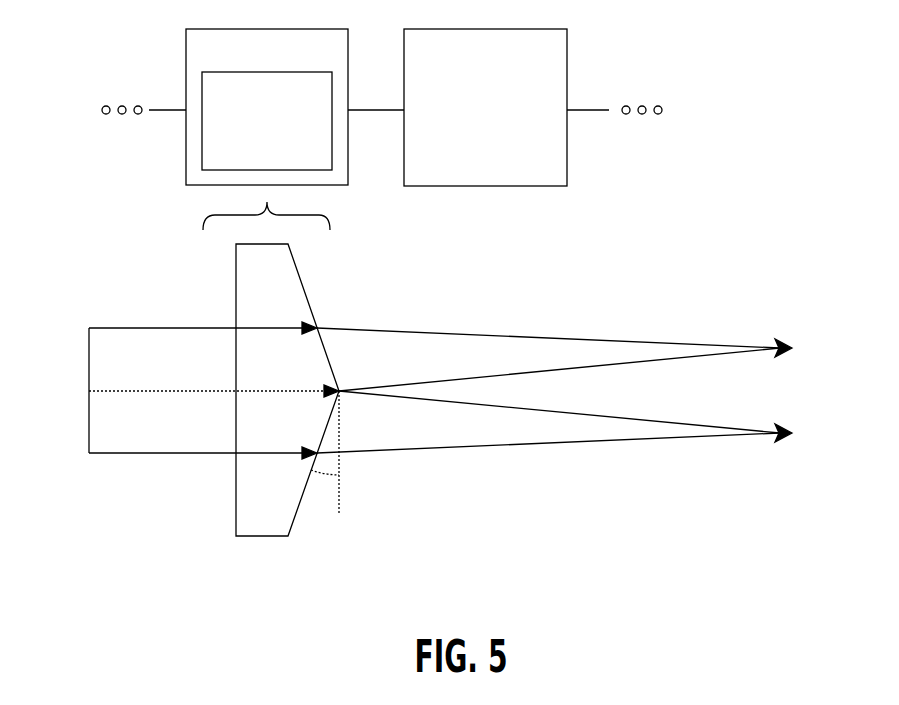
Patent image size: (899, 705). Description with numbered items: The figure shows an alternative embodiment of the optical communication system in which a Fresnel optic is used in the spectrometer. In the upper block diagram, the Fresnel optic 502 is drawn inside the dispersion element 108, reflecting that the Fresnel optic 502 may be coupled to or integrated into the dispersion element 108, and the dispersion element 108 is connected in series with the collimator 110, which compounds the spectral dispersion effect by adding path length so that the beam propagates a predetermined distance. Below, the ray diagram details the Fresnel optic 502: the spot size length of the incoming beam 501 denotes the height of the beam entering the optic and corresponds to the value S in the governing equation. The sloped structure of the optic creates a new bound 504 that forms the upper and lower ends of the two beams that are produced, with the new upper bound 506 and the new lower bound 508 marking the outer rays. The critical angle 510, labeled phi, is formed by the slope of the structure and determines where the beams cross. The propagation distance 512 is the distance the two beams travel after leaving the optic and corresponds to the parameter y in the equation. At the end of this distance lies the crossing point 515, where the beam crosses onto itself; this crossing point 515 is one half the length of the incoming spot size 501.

The dispersion element 108 is at (252, 60).
The Fresnel optic 502 is at (252, 131).
The collimator 110 is at (471, 120).
The spot size length of incoming beam 501 is at (82, 328).
The new bound created by the Fresnel optic 504 is at (257, 387).
The new upper bound 506 is at (222, 327).
The new lower bound 508 is at (222, 450).
The critical angle 510 is at (330, 517).
The propagation distance 512 is at (507, 317).
The crossing point 515 is at (800, 338).